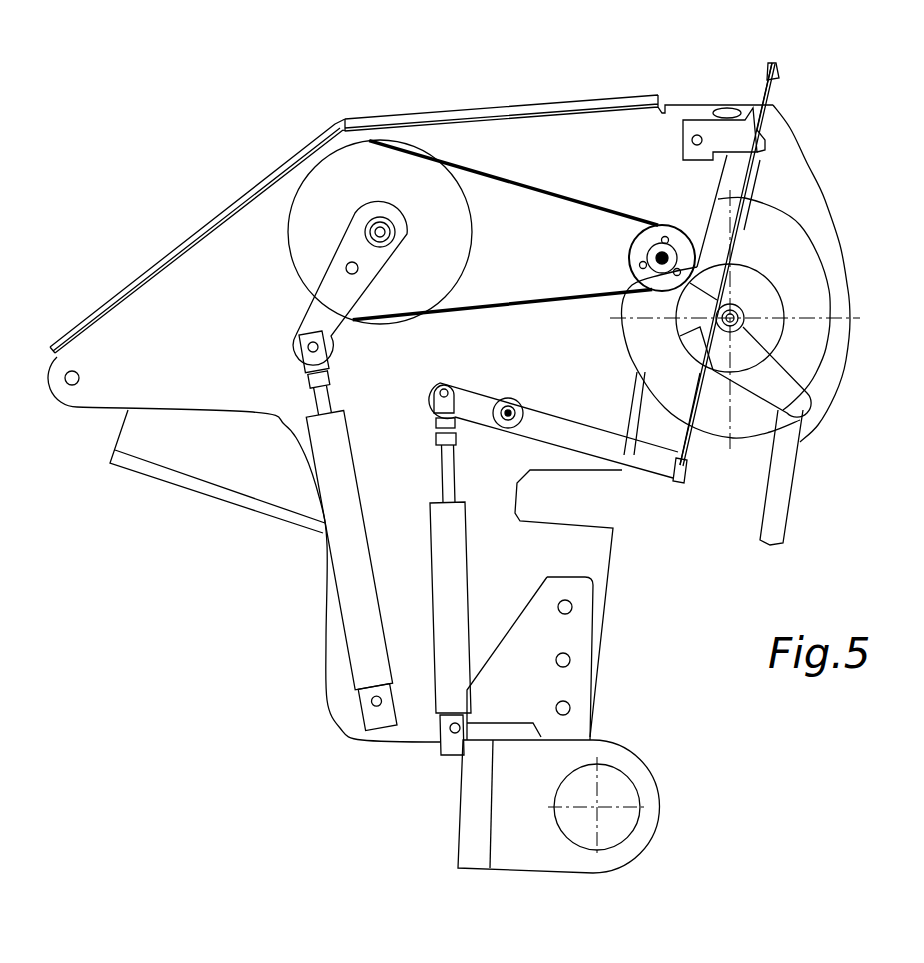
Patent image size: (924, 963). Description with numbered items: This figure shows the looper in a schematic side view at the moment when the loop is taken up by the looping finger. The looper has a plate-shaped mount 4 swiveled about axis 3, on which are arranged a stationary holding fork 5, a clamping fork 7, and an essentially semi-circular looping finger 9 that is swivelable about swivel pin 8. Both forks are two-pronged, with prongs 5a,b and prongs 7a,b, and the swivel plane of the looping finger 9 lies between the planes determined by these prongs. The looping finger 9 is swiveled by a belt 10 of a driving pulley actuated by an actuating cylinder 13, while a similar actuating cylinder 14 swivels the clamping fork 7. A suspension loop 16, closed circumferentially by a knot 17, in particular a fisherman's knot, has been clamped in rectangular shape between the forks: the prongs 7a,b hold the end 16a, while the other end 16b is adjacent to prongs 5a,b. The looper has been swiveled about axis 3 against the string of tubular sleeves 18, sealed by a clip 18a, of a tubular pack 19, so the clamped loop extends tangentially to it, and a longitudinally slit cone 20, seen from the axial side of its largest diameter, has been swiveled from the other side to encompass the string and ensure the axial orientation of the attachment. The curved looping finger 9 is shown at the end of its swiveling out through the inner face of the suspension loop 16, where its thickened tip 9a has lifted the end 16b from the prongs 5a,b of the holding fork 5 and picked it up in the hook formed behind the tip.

The axis 3 is at (598, 805).
The plate-shaped mount 4 is at (173, 290).
The stationary holding fork 5 is at (715, 135).
The prongs of the holding fork 5a,b is at (773, 135).
The clamping fork 7 is at (645, 460).
The prongs of the clamping fork 7a,b is at (685, 473).
The swivel pin 8 is at (660, 250).
The looping finger 9 is at (800, 170).
The thickened tip 9a is at (738, 110).
The belt 10 is at (547, 300).
The actuating cylinder 13 is at (340, 462).
The actuating cylinder 14 is at (462, 572).
The suspension loop 16 is at (745, 207).
The end of the suspension loop 16a is at (673, 480).
The end of the suspension loop 16b is at (763, 110).
The knot 17 is at (773, 117).
The string of tubular sleeves 18 is at (730, 318).
The clip 18a is at (795, 375).
The tubular pack 19 is at (838, 300).
The longitudinally slit cone 20 is at (768, 340).